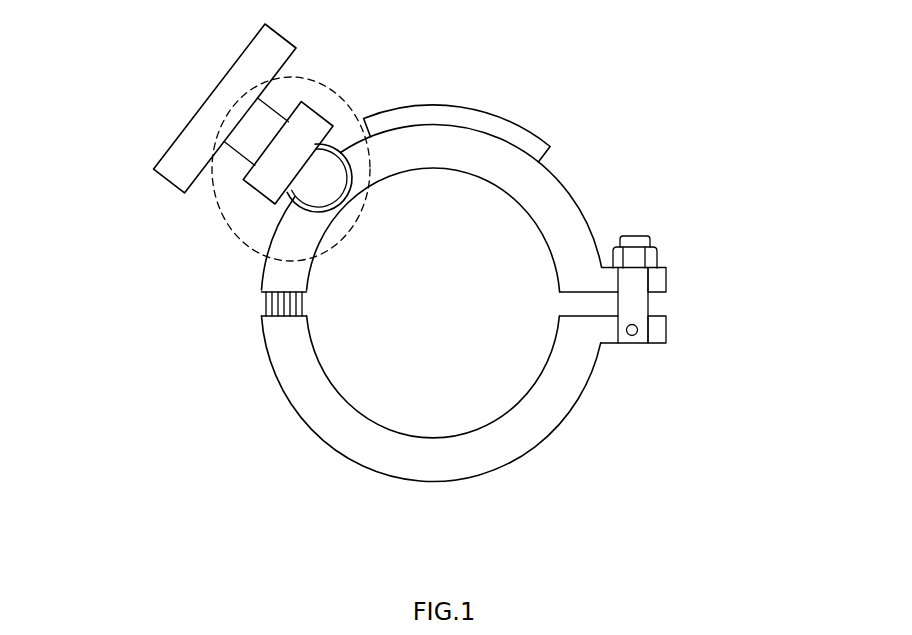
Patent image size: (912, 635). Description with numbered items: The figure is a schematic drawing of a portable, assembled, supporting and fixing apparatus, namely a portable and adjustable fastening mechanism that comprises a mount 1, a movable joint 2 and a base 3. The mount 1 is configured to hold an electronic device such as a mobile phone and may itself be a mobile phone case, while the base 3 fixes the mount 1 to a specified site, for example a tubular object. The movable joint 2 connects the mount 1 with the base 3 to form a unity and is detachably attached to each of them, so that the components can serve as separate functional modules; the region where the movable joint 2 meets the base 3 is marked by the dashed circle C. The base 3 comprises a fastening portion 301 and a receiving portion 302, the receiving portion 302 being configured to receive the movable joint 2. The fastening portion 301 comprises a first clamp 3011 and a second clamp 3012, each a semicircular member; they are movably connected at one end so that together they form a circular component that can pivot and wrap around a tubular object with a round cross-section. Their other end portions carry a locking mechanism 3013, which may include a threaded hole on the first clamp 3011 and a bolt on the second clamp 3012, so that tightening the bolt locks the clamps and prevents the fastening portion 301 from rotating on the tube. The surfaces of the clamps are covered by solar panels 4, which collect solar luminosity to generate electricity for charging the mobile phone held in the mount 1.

The mount 1 is at (192, 153).
The movable joint 2 is at (300, 132).
The detail region C is at (273, 210).
The base 3 is at (298, 361).
The solar panels 4 is at (478, 113).
The fastening portion 301 is at (707, 286).
The receiving portion 302 is at (352, 175).
The first clamp 3011 is at (545, 182).
The second clamp 3012 is at (579, 357).
The locking mechanism 3013 is at (667, 273).